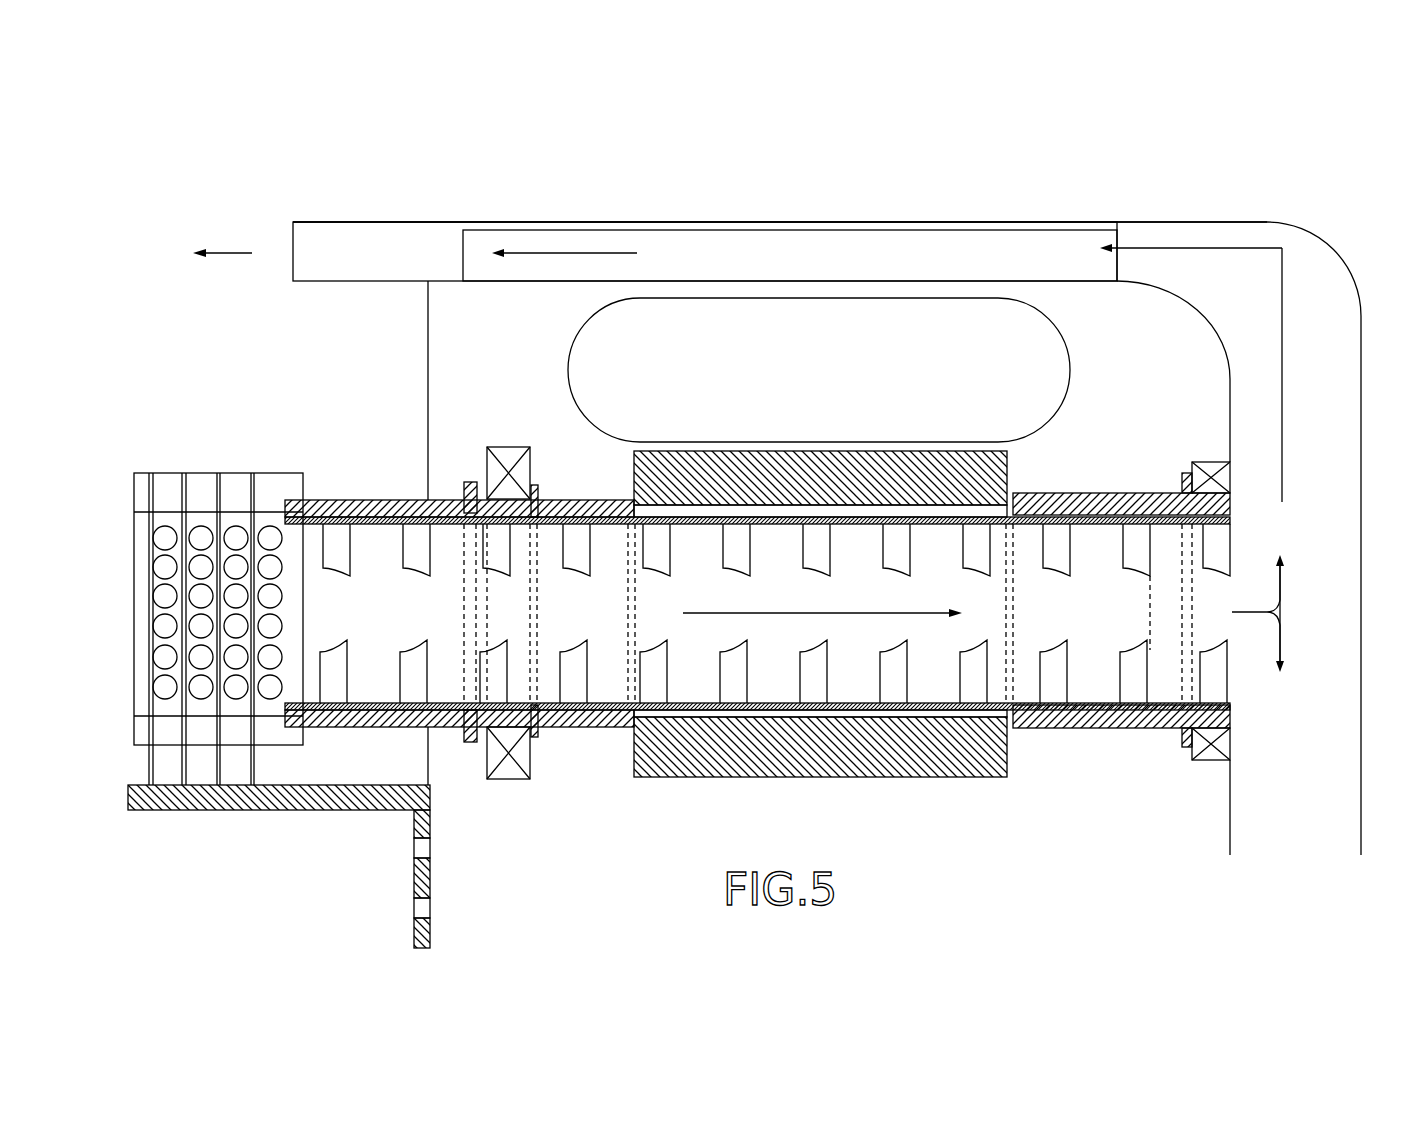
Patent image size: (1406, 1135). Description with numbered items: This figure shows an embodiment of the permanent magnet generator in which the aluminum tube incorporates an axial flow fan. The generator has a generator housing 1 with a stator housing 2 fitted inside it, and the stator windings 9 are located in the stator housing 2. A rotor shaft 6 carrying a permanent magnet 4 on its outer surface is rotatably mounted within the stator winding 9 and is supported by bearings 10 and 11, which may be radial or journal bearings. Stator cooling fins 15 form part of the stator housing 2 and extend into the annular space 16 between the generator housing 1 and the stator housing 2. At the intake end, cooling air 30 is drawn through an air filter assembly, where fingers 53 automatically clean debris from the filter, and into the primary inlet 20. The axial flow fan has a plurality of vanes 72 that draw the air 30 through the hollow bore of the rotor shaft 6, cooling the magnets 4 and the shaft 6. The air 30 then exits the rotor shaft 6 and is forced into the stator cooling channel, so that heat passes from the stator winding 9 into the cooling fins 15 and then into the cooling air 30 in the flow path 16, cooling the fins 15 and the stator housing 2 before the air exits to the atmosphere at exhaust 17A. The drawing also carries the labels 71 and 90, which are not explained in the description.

The generator housing 1 is at (1340, 260).
The stator housing 2 is at (1218, 337).
The permanent magnet 4 is at (1010, 467).
The rotor shaft 6 is at (381, 499).
The stator windings 9 is at (820, 368).
The bearing 10 is at (516, 445).
The bearing 11 is at (1210, 462).
The stator cooling fins 15 is at (822, 268).
The annular space 16 is at (286, 217).
The exhaust 17A is at (1336, 614).
The primary inlet 20 is at (122, 608).
The cooling air 30 is at (738, 457).
The fingers 53 is at (135, 498).
The rotor rim 71 is at (322, 499).
The vanes 72 is at (1055, 570).
The turbomachine 90 is at (782, 183).